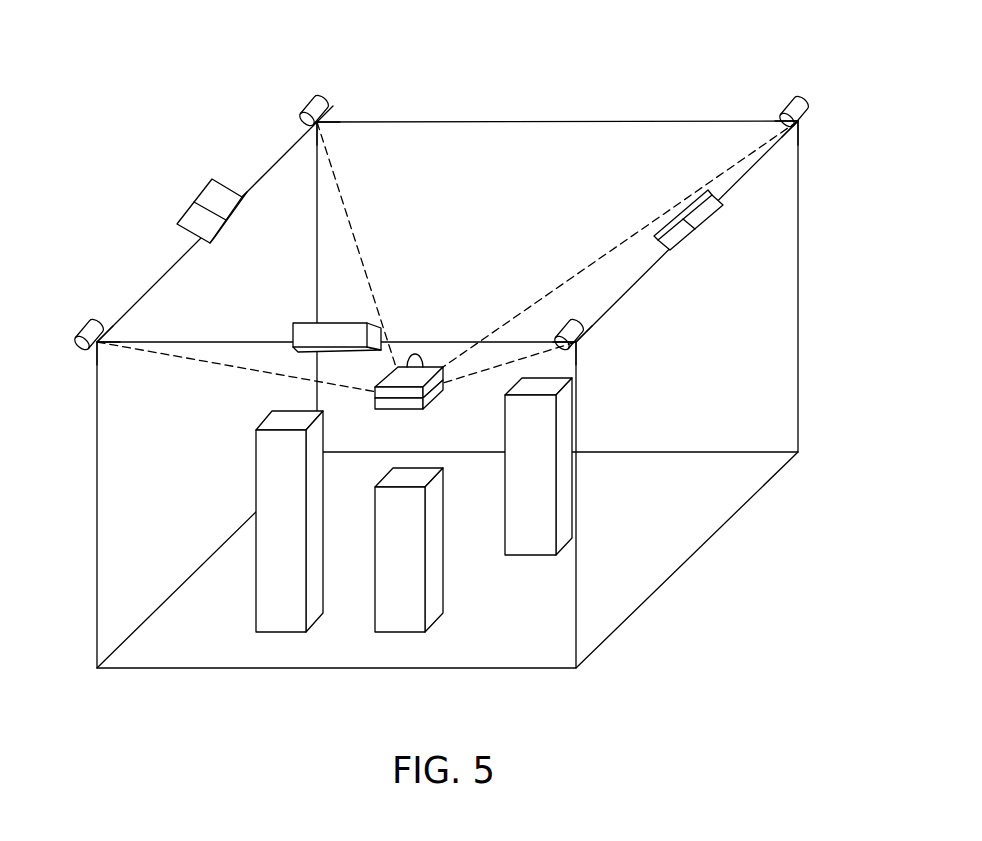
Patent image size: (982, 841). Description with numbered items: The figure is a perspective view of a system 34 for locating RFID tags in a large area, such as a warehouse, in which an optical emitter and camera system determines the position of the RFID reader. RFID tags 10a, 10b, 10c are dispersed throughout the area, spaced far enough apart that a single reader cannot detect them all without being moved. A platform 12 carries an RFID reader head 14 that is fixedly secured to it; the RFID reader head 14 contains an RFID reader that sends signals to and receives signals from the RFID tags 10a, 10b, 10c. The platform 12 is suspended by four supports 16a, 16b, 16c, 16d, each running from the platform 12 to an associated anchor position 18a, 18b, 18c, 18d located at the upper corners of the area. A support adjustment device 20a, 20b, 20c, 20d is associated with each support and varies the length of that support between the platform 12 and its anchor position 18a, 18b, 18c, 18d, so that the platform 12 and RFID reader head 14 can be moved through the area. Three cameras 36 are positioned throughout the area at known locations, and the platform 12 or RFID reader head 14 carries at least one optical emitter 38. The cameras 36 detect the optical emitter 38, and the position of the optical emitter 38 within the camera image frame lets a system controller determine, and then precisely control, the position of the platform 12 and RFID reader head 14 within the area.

The system 34 is at (579, 95).
The RFID tag 10a is at (532, 557).
The RFID tag 10b is at (428, 598).
The RFID tag 10c is at (280, 633).
The platform 12 is at (440, 365).
The RFID reader head 14 is at (400, 410).
The support 16a is at (636, 233).
The support 16b is at (549, 352).
The support 16c is at (216, 363).
The support 16d is at (353, 228).
The anchor position 18a is at (800, 123).
The anchor position 18b is at (578, 343).
The anchor position 18c is at (99, 341).
The anchor position 18d is at (320, 121).
The support adjustment device 20a is at (806, 93).
The support adjustment device 20b is at (590, 326).
The support adjustment device 20c is at (86, 327).
The support adjustment device 20d is at (313, 101).
The camera 36 is at (183, 216).
The optical emitter 38 is at (412, 356).